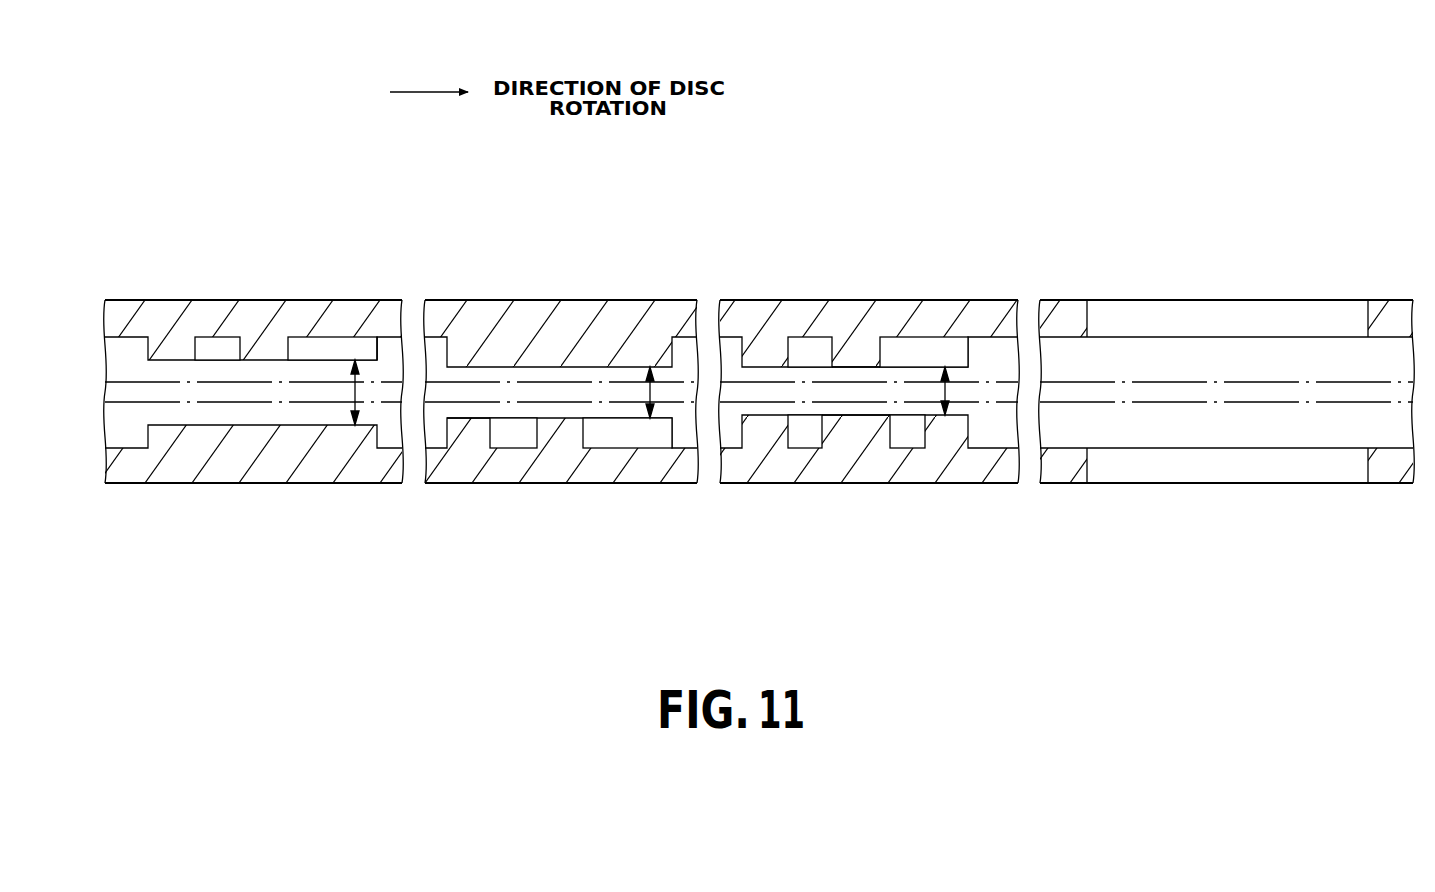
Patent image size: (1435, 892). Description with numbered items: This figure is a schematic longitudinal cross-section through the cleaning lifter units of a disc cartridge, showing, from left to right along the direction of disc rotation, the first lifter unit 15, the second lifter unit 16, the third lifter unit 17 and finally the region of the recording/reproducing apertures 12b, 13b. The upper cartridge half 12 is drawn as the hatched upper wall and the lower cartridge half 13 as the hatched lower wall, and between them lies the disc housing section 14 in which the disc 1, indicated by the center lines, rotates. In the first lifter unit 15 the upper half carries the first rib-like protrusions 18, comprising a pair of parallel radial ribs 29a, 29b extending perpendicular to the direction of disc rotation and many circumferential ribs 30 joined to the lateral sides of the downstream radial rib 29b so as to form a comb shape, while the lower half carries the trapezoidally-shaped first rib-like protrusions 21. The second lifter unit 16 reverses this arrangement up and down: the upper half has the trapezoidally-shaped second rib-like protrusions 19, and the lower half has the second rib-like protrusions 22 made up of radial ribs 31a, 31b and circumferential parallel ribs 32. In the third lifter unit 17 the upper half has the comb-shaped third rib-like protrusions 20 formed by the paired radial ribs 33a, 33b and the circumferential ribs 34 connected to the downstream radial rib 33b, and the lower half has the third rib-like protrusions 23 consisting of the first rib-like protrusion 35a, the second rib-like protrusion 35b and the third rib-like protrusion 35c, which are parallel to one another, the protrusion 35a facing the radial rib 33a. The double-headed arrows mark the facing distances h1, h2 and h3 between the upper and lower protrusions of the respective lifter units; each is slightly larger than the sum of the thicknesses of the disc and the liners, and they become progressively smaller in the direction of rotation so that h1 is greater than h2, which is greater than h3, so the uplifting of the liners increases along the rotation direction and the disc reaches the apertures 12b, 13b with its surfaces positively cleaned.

The disc 1 is at (1000, 378).
The upper cartridge half 12 is at (988, 317).
The recording/reproducing aperture 12b is at (1318, 350).
The lower cartridge half 13 is at (1003, 465).
The recording/reproducing aperture 13b is at (1368, 462).
The disc housing section 14 is at (1062, 427).
The first lifter unit 15 is at (252, 200).
The second lifter unit 16 is at (553, 255).
The third lifter unit 17 is at (822, 185).
The first rib-like protrusions 18 is at (415, 232).
The second rib-like protrusions 19 is at (675, 350).
The third rib-like protrusions 20 is at (980, 232).
The first rib-like protrusions 21 is at (142, 433).
The second rib-like protrusions 22 is at (630, 557).
The third rib-like protrusions 23 is at (935, 557).
The radial rib 29a is at (196, 340).
The radial rib 29b is at (289, 340).
The circumferential ribs 30 is at (378, 343).
The radial rib 31a is at (495, 425).
The radial rib 31b is at (537, 427).
The circumferential parallel ribs 32 is at (607, 432).
The radial rib 33a is at (790, 347).
The radial rib 33b is at (880, 347).
The circumferential ribs 34 is at (942, 352).
The first rib-like protrusion 35a is at (795, 428).
The second rib-like protrusion 35b is at (812, 428).
The third rib-like protrusion 35c is at (907, 432).
The facing distance h1 is at (352, 400).
The facing distance h2 is at (645, 405).
The facing distance h3 is at (955, 408).